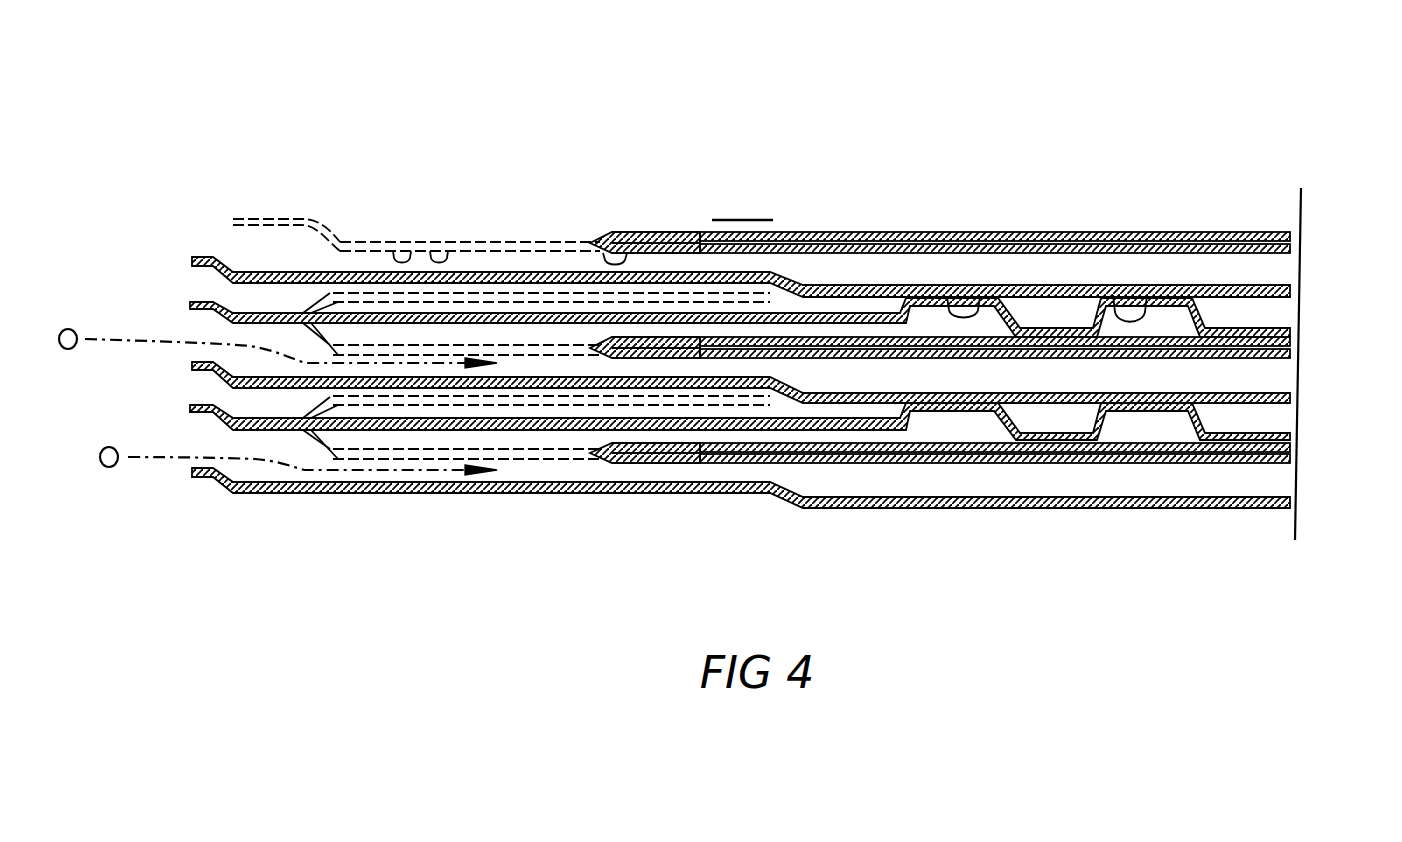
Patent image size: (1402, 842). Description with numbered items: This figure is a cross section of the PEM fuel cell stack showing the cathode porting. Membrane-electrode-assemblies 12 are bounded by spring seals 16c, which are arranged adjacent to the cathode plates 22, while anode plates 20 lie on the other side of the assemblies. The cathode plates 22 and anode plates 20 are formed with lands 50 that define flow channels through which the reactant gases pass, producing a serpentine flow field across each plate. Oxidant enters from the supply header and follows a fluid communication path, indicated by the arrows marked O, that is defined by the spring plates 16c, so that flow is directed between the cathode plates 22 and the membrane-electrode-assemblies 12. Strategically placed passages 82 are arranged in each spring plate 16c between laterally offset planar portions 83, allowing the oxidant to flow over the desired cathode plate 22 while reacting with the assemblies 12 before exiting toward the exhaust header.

The membrane-electrode-assembly 12 is at (1290, 345).
The anode plate 20 is at (190, 303).
The cathode plate 22 is at (190, 258).
The spring seal 16c is at (520, 462).
The land 50 is at (1112, 295).
The passage 82 is at (372, 470).
The planar portion 83 is at (393, 272).